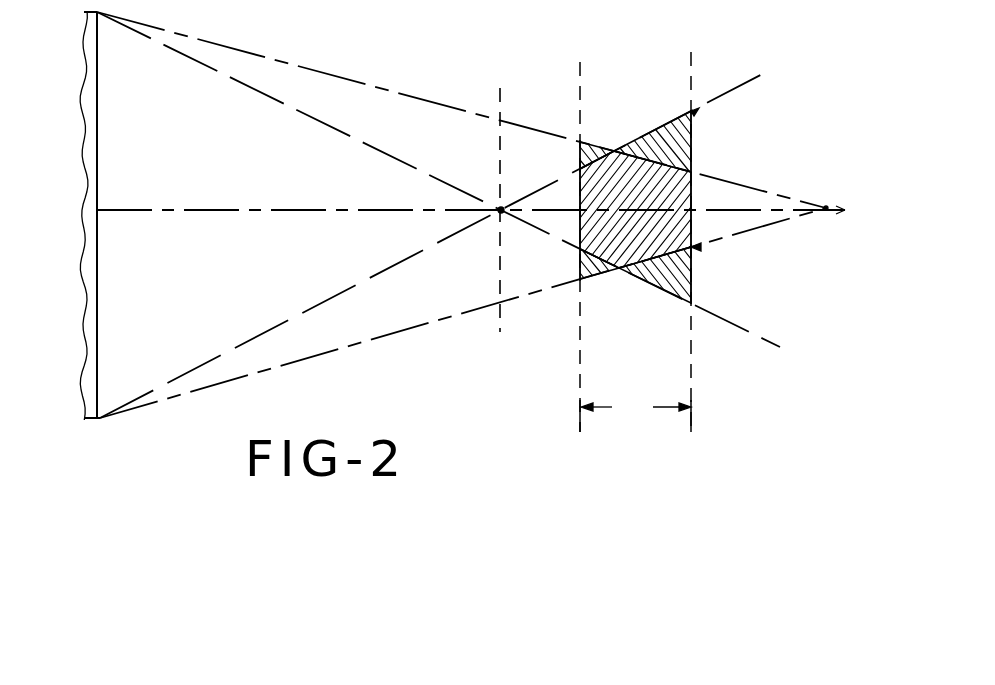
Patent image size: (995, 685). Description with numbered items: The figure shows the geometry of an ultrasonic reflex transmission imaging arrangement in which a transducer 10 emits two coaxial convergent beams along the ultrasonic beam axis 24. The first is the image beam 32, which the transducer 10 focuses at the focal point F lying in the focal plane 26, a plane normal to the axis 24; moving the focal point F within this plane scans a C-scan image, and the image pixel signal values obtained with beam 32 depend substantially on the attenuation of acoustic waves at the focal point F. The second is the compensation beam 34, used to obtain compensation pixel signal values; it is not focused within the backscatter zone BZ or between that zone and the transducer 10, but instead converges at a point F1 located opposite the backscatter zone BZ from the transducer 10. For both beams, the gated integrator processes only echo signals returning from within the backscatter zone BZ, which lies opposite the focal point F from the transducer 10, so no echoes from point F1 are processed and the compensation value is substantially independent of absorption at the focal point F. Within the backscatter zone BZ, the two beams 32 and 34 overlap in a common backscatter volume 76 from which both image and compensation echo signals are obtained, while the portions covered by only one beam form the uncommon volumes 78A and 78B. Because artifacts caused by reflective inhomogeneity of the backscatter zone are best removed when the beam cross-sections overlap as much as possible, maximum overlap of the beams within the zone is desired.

The transducer 10 is at (90, 420).
The ultrasonic beam axis 24 is at (222, 210).
The focal plane 26 is at (498, 98).
The image beam 32 is at (278, 330).
The compensation beam 34 is at (372, 342).
The common backscatter volume 76 is at (619, 258).
The uncommon volume 78A is at (583, 148).
The uncommon volume 78B is at (690, 140).
The focal point F is at (497, 217).
The compensation focal point F1 is at (824, 212).
The backscatter zone BZ is at (635, 242).